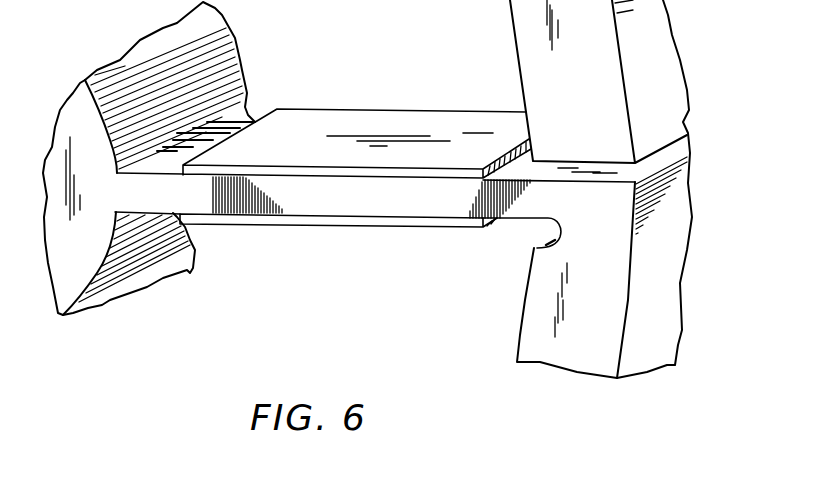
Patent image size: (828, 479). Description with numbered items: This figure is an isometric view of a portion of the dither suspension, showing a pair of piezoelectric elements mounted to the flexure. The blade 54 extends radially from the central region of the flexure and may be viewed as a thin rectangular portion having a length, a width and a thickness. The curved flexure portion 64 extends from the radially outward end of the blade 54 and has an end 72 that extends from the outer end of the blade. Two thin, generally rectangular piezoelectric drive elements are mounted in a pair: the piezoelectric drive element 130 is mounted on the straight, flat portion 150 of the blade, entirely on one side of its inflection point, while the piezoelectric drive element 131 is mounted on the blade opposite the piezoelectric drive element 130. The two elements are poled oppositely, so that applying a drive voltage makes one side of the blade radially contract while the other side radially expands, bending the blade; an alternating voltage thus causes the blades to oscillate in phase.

The blade 54 is at (192, 273).
The straight, flat portion 150 is at (338, 213).
The piezoelectric drive element 131 is at (456, 118).
The piezoelectric drive element 130 is at (437, 227).
The end of curved flexure portion 72 is at (697, 224).
The curved flexure portion 64 is at (618, 355).